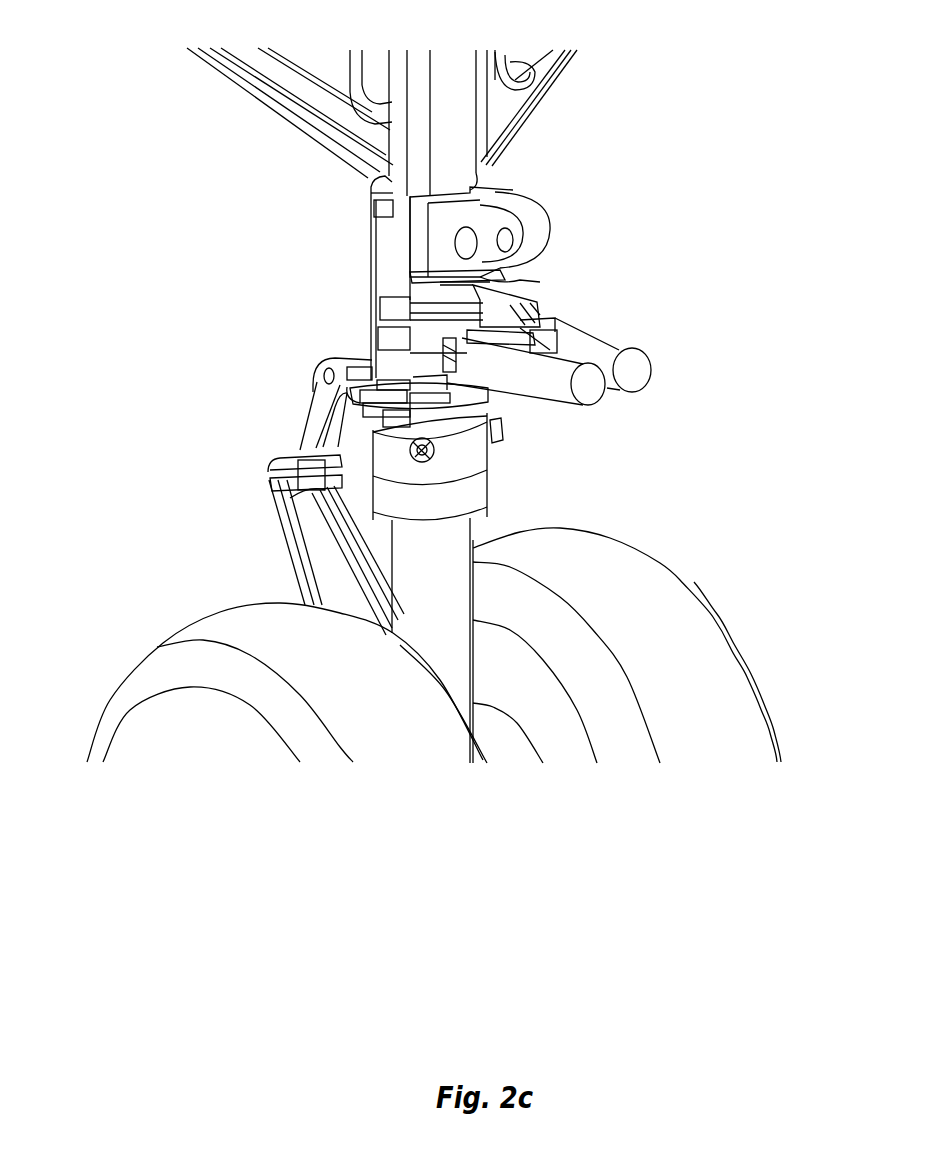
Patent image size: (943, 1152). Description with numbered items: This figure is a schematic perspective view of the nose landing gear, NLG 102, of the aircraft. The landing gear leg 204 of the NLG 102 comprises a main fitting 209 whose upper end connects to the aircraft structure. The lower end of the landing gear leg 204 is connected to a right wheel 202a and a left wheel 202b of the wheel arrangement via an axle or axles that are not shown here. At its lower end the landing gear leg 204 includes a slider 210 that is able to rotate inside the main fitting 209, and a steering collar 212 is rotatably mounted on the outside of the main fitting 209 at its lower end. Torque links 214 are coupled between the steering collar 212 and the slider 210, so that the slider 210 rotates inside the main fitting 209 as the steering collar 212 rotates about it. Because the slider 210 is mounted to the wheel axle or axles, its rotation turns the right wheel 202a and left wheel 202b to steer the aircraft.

The NLG 102 is at (684, 134).
The landing gear leg 204 is at (258, 314).
The main fitting 209 is at (377, 260).
The slider 210 is at (467, 527).
The steering collar 212 is at (482, 402).
The torque links 214 is at (267, 497).
The right wheel 202a is at (647, 585).
The left wheel 202b is at (193, 638).